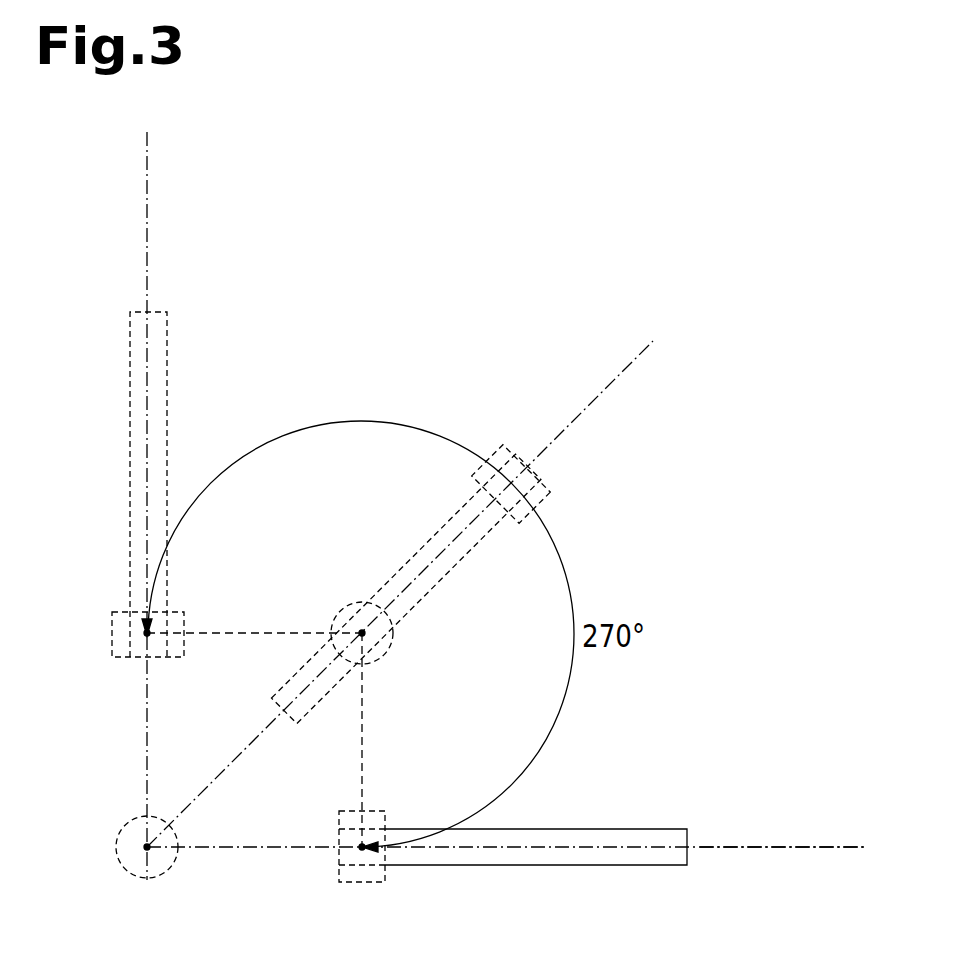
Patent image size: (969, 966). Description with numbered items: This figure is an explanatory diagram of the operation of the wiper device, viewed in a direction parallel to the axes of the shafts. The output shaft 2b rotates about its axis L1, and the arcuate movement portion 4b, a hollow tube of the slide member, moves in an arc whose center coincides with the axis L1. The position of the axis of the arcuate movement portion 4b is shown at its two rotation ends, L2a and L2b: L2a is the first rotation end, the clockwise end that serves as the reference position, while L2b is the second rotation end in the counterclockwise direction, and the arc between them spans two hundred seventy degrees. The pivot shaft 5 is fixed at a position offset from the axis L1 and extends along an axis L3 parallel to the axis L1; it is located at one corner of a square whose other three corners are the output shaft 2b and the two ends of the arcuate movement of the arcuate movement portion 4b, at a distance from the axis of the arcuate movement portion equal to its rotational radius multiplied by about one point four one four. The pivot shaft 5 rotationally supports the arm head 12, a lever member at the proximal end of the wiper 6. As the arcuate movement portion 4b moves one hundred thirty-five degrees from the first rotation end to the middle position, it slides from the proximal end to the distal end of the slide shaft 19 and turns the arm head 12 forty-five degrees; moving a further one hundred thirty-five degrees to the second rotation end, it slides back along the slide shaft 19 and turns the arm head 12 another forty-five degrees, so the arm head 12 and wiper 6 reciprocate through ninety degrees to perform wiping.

The output shaft 2b is at (392, 638).
The arcuate movement portion 4b is at (347, 883).
The pivot shaft 5 is at (118, 833).
The wiper 6 is at (841, 847).
The arm head 12 is at (777, 847).
The slide shaft 19 is at (533, 866).
The axis of the output shaft L1 is at (361, 632).
The first rotation end position of axis L2 L2a is at (362, 856).
The second rotation end position of axis L2 L2b is at (146, 634).
The axis of the pivot shaft L3 is at (147, 858).